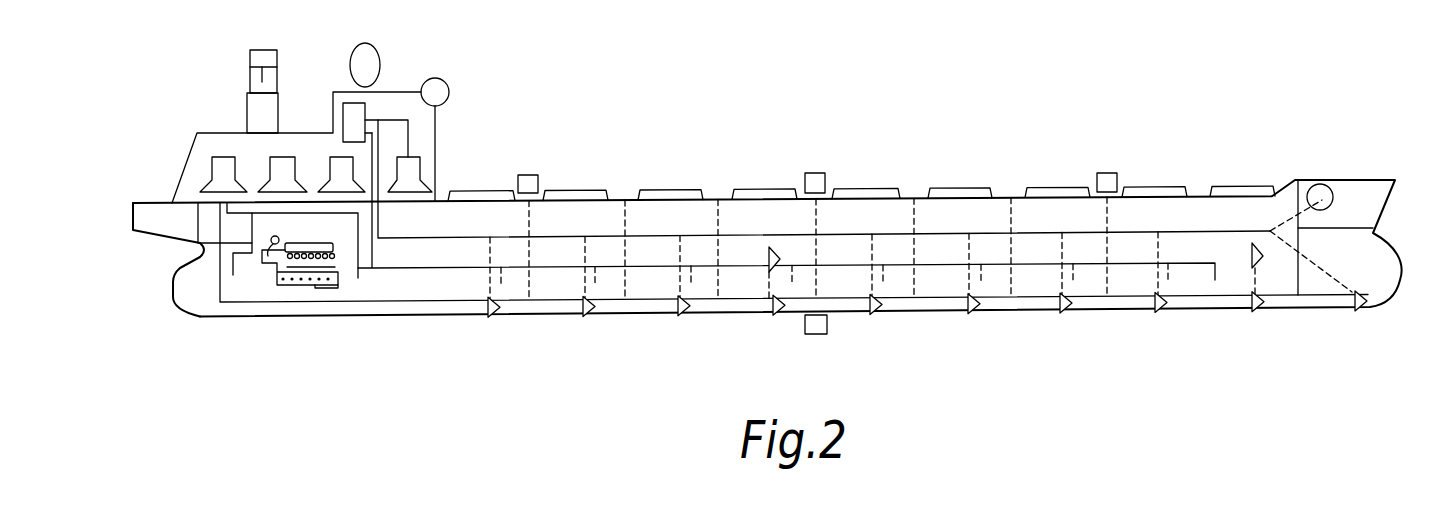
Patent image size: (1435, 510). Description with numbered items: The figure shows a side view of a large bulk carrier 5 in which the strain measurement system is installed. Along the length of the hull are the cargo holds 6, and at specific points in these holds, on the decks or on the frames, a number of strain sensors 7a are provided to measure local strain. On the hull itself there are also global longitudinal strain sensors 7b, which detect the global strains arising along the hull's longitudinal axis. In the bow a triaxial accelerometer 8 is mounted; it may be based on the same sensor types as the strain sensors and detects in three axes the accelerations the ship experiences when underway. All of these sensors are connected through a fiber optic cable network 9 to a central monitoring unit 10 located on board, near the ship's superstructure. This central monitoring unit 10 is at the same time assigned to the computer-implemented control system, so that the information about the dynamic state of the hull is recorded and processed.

The bulk carrier 5 is at (930, 168).
The cargo hold 6 is at (653, 283).
The strain sensor 7a is at (586, 314).
The global longitudinal strain sensor 7b is at (532, 174).
The triaxial accelerometer 8 is at (1318, 186).
The fiber optic cable network 9 is at (410, 270).
The central monitoring unit 10 is at (343, 112).